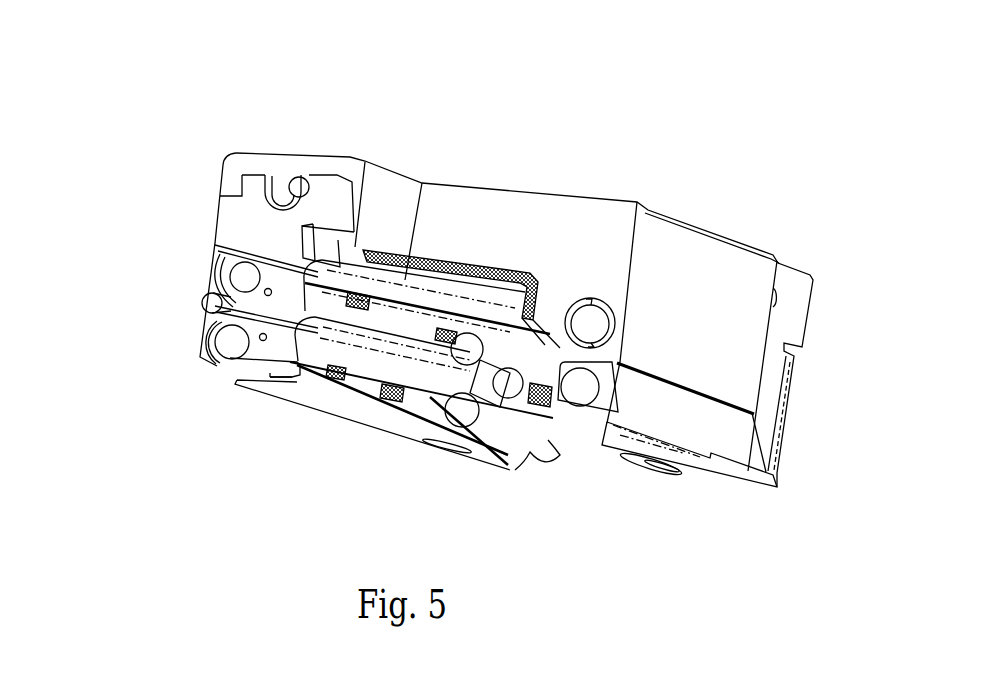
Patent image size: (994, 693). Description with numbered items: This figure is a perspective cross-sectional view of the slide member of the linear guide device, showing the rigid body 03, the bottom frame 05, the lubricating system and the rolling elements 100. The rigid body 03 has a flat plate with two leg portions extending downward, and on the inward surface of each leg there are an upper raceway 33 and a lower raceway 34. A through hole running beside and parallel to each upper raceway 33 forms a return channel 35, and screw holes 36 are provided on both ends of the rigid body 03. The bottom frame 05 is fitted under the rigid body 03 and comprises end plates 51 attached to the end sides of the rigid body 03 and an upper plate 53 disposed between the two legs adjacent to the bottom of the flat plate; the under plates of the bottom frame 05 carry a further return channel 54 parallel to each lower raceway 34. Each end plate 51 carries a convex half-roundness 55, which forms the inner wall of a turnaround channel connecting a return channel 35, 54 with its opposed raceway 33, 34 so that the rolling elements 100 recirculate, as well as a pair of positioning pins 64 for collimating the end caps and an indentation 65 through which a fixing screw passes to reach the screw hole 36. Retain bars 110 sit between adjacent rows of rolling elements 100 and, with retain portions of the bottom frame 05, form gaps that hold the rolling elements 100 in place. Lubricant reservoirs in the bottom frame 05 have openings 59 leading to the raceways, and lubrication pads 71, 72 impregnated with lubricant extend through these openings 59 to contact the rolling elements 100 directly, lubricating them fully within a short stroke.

The rigid body 03 is at (655, 245).
The bottom frame 05 is at (563, 418).
The upper raceway 33 is at (375, 333).
The lower raceway 34 is at (357, 360).
The return channel 35 is at (600, 322).
The screw hole 36 is at (292, 188).
The end plate 51 is at (323, 200).
The upper plate 53 is at (357, 250).
The return channel 54 is at (235, 343).
The convex half-roundness 55 is at (263, 272).
The opening 59 is at (323, 373).
The positioning pin 64 is at (203, 305).
The indentation 65 is at (273, 198).
The lubrication pad 71 is at (363, 300).
The lubrication pad 72 is at (393, 392).
The rolling elements 100 is at (466, 407).
The retain bar 110 is at (489, 397).